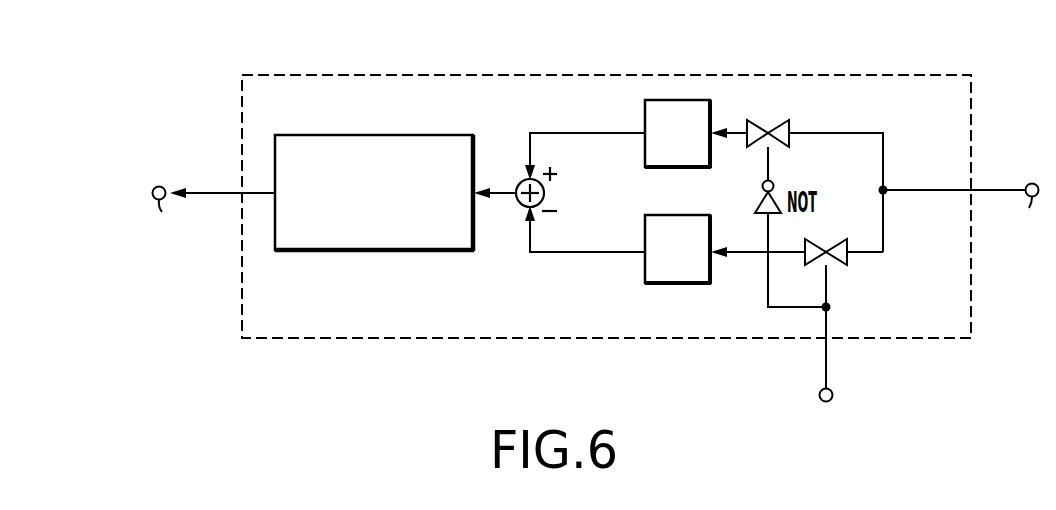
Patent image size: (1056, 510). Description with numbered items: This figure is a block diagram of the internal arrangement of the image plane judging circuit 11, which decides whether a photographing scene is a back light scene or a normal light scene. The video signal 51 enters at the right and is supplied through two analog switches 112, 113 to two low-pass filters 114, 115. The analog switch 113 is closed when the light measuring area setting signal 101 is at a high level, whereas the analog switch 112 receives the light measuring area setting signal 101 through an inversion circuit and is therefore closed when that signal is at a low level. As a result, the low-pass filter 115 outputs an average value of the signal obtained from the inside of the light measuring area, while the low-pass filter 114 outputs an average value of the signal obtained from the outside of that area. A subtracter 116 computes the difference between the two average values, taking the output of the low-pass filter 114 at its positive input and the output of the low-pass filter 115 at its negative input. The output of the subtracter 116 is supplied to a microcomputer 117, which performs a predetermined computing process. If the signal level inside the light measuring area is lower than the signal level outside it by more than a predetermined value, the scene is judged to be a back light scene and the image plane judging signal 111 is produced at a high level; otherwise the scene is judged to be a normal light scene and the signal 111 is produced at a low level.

The image plane judging circuit 11 is at (355, 75).
The video signal 51 is at (962, 215).
The light measuring area setting signal 101 is at (833, 393).
The image plane judging signal 111 is at (209, 219).
The analog switch 112 is at (766, 130).
The analog switch 113 is at (835, 262).
The low-pass filter 114 is at (645, 114).
The low-pass filter 115 is at (645, 268).
The subtracter 116 is at (547, 192).
The microcomputer 117 is at (360, 254).